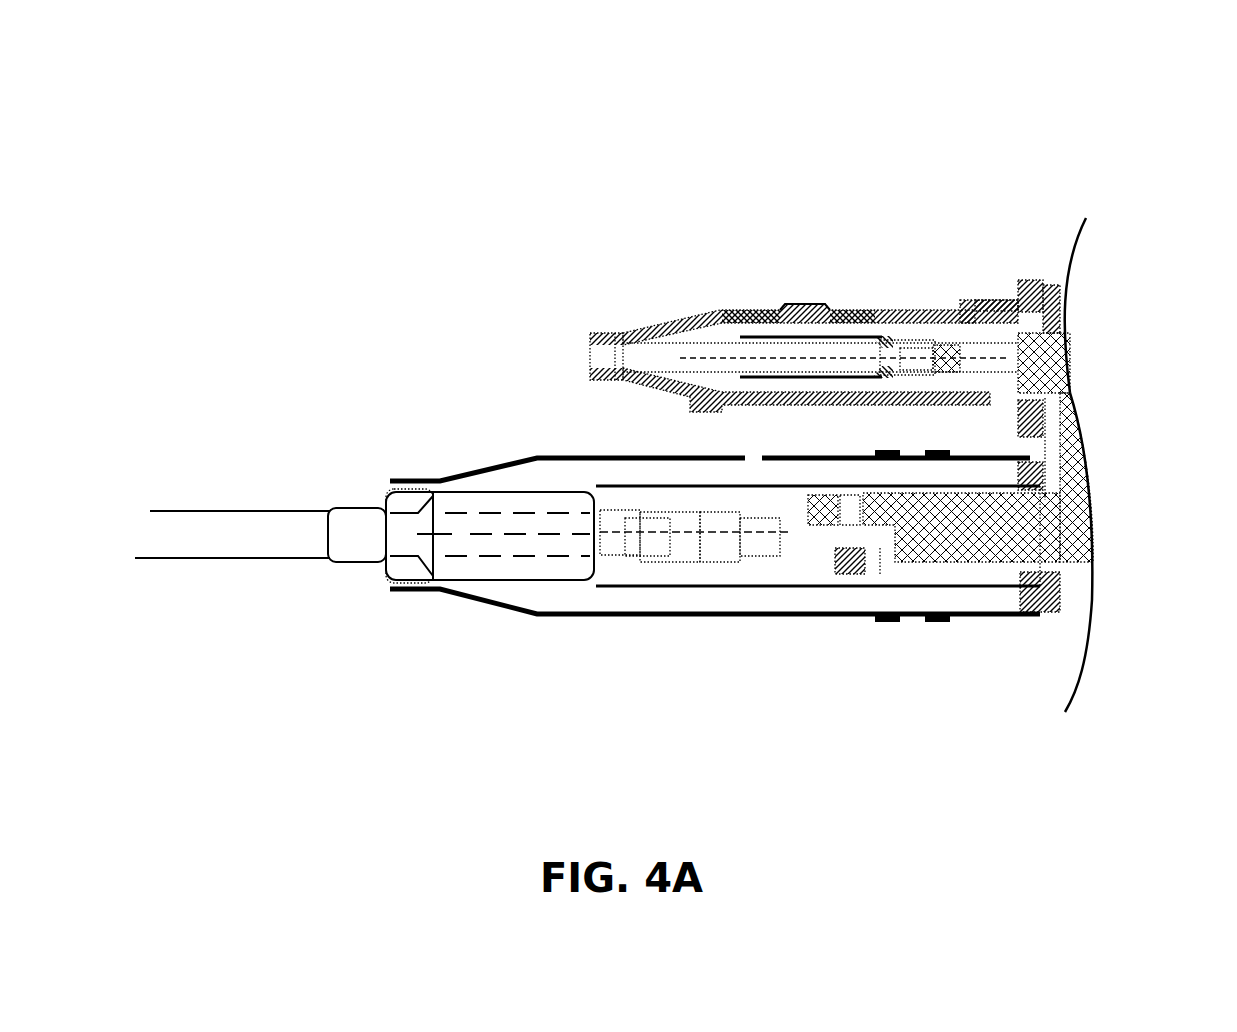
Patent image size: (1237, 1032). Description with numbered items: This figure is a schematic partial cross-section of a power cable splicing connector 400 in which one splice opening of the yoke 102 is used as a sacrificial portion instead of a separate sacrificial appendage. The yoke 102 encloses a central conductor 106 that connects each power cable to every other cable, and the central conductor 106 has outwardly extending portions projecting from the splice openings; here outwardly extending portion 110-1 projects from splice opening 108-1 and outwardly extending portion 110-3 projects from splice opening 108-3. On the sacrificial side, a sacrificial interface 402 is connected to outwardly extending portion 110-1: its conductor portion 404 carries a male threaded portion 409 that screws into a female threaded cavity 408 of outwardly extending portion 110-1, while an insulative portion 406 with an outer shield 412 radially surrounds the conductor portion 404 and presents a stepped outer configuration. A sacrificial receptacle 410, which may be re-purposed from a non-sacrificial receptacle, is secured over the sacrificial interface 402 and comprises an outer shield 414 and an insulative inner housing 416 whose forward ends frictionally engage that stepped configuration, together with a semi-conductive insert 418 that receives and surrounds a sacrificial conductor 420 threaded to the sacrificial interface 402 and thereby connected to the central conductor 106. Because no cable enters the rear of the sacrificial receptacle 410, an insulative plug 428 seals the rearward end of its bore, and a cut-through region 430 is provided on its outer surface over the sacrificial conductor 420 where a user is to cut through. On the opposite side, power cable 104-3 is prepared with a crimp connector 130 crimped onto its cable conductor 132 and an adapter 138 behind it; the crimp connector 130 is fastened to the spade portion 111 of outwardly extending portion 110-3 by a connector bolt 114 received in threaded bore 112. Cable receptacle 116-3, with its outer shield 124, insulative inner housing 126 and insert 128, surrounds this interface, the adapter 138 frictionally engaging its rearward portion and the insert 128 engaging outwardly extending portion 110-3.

The power cable splicing connector 400 is at (676, 333).
The insulative plug 428 is at (645, 357).
The sacrificial receptacle 410 is at (720, 302).
The outer shield 414 is at (758, 316).
The cut-through region 430 is at (815, 305).
The insulative inner housing 416 is at (853, 326).
The sacrificial conductor 420 is at (828, 362).
The semi-conductive insert 418 is at (850, 380).
The conductor portion 404 is at (960, 350).
The insulative portion 406 is at (966, 380).
The sacrificial interface 402 is at (1000, 330).
The outer shield 412 is at (1010, 320).
The male threaded portion 409 is at (1018, 362).
The female threaded cavity 408 is at (1030, 372).
The splice opening 108-1 is at (1030, 330).
The outwardly extending portion 110-1 is at (1052, 340).
The yoke 102 is at (1077, 430).
The central conductor 106 is at (1070, 518).
The power cable 104-3 is at (252, 559).
The cable conductor 132 is at (592, 532).
The adapter 138 is at (453, 514).
The insulative inner housing 126 is at (616, 466).
The outer shield 124 is at (520, 614).
The insert 128 is at (692, 487).
The crimp connector 130 is at (690, 548).
The spade portion 111 is at (830, 507).
The threaded bore 112 is at (846, 502).
The connector bolt 114 is at (858, 570).
The cable receptacle 116-3 is at (615, 638).
The outwardly extending portion 110-3 is at (920, 574).
The splice opening 108-3 is at (1005, 580).